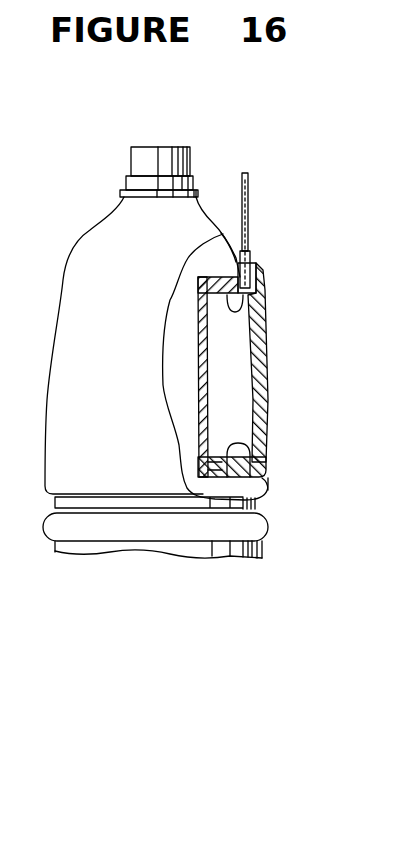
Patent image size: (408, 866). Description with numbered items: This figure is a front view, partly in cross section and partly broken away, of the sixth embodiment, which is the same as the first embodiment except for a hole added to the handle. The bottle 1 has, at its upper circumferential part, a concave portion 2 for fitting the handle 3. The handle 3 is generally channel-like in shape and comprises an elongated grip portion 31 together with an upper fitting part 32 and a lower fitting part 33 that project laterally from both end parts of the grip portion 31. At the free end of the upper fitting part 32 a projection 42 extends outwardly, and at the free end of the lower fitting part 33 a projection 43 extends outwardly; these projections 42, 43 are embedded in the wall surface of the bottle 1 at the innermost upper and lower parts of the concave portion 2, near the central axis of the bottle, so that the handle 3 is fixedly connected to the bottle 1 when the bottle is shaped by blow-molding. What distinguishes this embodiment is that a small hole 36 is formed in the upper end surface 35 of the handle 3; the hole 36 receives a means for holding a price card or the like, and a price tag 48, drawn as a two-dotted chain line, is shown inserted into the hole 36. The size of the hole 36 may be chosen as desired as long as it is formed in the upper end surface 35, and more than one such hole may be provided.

The bottle 1 is at (108, 218).
The concave portion 2 is at (211, 397).
The handle 3 is at (260, 337).
The grip portion 31 is at (268, 400).
The upper fitting part 32 is at (258, 294).
The lower fitting part 33 is at (257, 449).
The upper end surface 35 is at (255, 268).
The small hole 36 is at (252, 260).
The projection 42 is at (196, 290).
The projection 43 is at (263, 487).
The price tag 48 is at (280, 224).